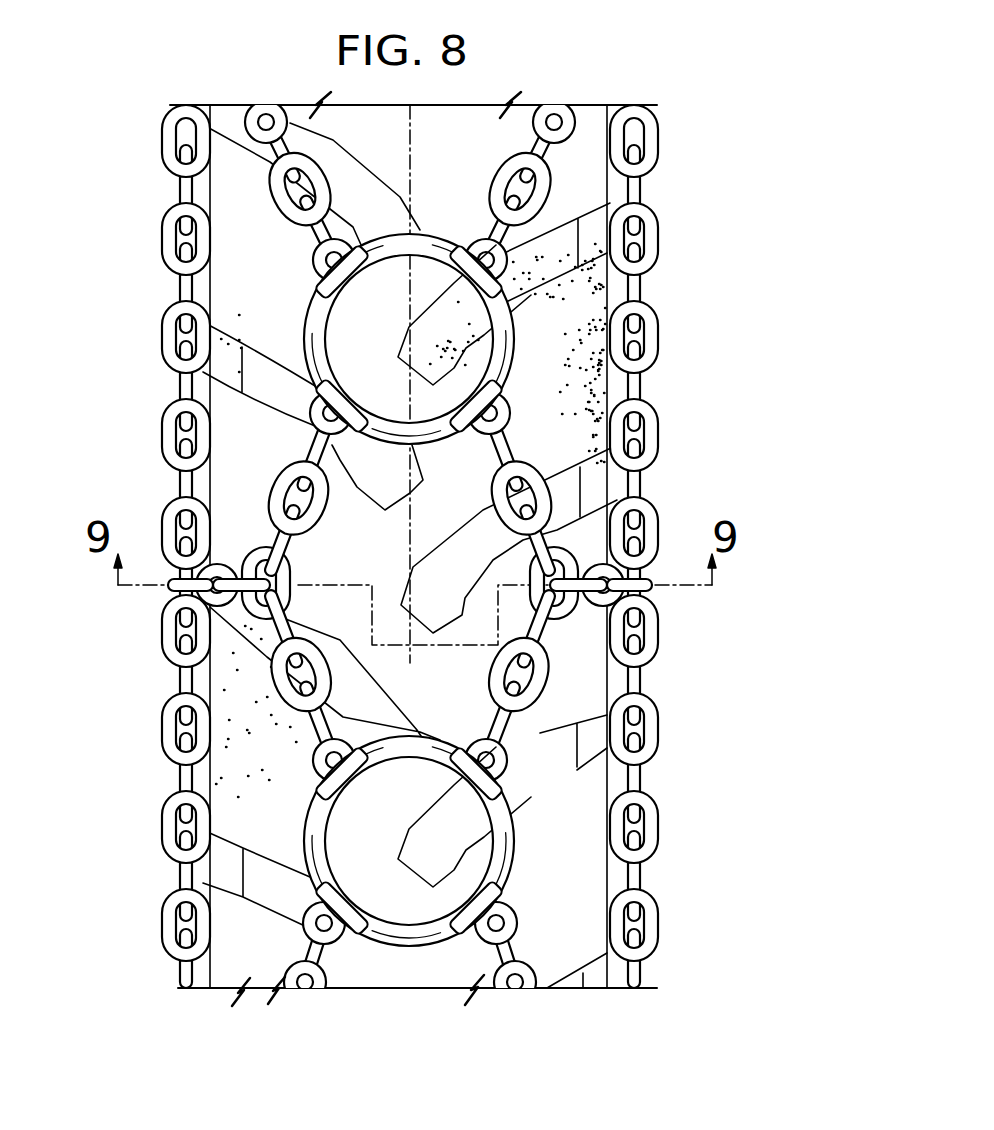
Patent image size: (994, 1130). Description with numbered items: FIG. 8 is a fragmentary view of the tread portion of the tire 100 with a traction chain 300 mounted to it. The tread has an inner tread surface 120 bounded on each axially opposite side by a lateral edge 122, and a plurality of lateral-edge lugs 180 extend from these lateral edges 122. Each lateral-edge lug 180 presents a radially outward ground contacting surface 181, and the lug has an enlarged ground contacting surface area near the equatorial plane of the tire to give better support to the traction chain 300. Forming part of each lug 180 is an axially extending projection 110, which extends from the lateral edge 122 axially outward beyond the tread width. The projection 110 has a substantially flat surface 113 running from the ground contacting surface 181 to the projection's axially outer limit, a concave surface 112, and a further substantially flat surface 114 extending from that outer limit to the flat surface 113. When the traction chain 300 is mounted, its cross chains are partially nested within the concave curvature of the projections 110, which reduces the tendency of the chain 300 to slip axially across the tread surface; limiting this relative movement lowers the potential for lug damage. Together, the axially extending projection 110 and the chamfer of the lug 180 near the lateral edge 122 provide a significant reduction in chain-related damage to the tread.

The tire 100 is at (238, 1000).
The axially extending projection 110 is at (622, 436).
The concave surface 112 is at (618, 933).
The substantially flat surface 113 is at (218, 867).
The substantially flat surface 114 is at (612, 470).
The inner tread surface 120 is at (552, 897).
The lateral edge 122 is at (210, 482).
The lateral-edge lug 180 is at (260, 353).
The ground contacting surface 181 is at (552, 732).
The traction chain 300 is at (668, 830).